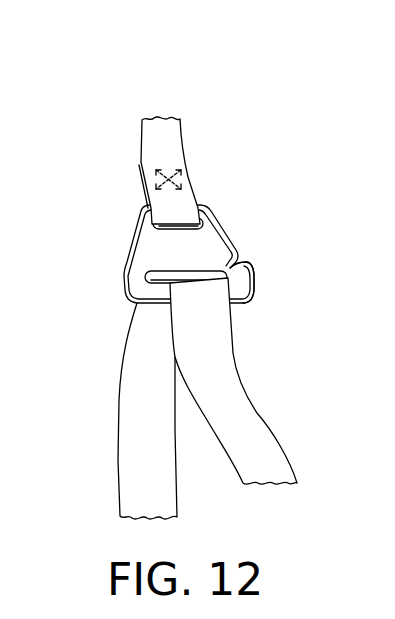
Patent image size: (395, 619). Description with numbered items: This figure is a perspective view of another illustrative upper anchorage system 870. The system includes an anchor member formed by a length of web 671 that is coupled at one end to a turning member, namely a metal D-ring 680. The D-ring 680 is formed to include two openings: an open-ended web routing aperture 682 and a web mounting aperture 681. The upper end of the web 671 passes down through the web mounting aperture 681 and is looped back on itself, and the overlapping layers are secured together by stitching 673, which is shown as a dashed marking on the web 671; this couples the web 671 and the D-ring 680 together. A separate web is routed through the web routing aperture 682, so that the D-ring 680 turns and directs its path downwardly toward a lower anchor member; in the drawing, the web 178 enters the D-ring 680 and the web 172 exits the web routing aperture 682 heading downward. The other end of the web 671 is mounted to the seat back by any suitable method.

The upper anchorage system 870 is at (147, 109).
The web 671 is at (145, 146).
The stitching 673 is at (180, 182).
The D-ring 680 is at (128, 256).
The web mounting aperture 681 is at (210, 221).
The web routing aperture 682 is at (270, 242).
The strap end 178 is at (135, 380).
The strap end 172 is at (240, 405).